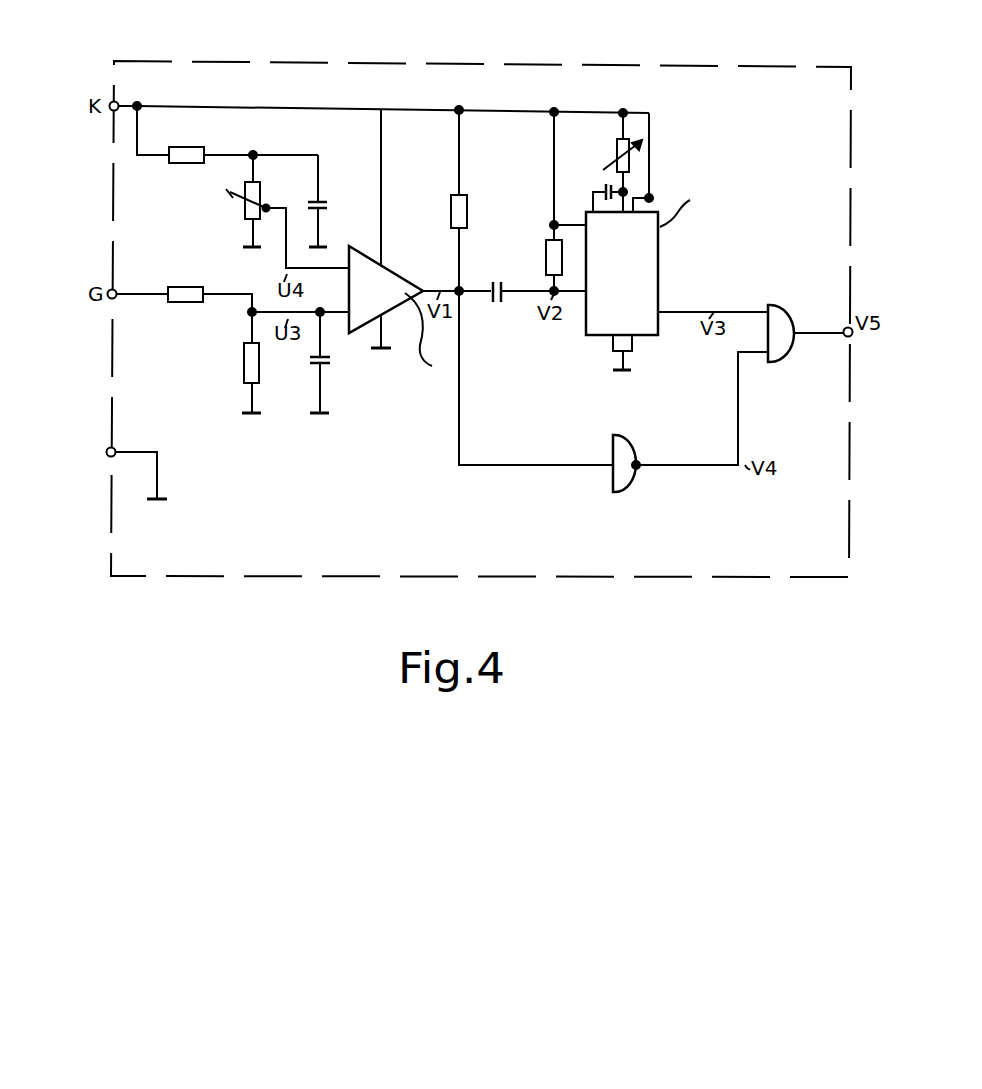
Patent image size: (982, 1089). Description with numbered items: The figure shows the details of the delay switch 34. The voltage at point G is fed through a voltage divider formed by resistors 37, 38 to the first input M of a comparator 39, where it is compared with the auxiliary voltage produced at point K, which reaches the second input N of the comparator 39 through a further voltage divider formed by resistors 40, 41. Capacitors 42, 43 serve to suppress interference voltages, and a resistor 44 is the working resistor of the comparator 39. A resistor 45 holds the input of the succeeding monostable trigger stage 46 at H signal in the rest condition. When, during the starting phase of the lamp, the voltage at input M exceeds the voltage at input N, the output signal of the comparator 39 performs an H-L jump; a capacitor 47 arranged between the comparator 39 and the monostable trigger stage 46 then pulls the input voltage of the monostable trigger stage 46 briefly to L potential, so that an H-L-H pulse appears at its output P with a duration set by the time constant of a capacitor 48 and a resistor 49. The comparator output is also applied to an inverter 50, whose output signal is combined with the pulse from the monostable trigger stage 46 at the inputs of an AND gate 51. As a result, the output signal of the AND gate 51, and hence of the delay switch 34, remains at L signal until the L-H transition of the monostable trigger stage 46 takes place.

The delay switch 34 is at (735, 62).
The resistor 37 is at (185, 304).
The resistor 38 is at (244, 373).
The comparator 39 is at (393, 283).
The resistor 40 is at (187, 157).
The resistor 41 is at (263, 187).
The capacitor 42 is at (322, 195).
The capacitor 43 is at (318, 366).
The resistor 44 is at (467, 208).
The resistor 45 is at (551, 258).
The monostable trigger stage 46 is at (643, 270).
The capacitor 47 is at (500, 305).
The capacitor 48 is at (603, 186).
The resistor 49 is at (617, 152).
The inverter 50 is at (628, 473).
The AND gate 51 is at (787, 347).